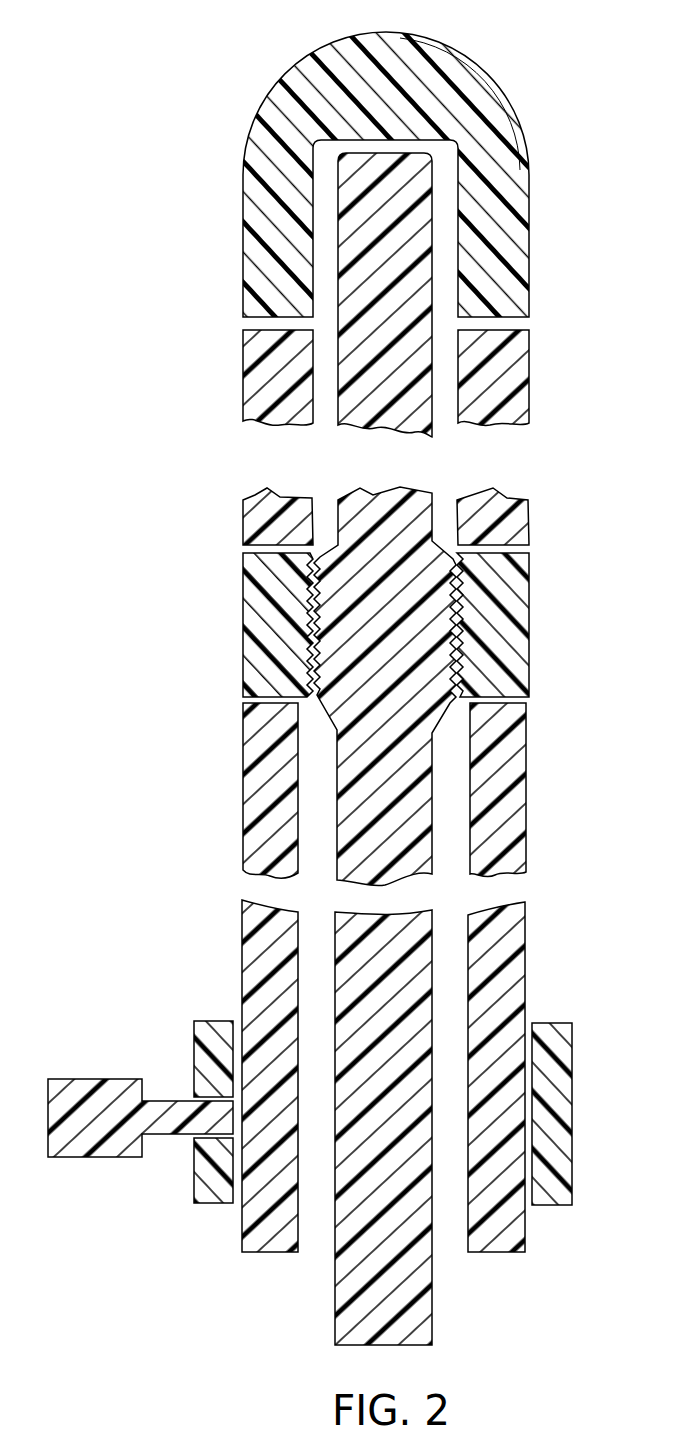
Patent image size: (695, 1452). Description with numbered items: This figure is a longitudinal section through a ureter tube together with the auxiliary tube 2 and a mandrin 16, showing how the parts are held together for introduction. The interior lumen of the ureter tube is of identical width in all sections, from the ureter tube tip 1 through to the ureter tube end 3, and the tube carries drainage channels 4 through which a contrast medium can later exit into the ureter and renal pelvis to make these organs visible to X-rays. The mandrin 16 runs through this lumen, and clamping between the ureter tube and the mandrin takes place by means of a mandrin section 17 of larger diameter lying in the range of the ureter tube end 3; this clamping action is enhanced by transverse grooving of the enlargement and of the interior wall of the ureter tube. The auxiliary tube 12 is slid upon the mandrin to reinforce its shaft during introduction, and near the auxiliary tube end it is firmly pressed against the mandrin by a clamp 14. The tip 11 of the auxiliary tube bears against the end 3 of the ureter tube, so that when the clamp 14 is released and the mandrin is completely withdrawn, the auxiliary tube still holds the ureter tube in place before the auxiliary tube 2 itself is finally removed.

The ureter tube tip 1 is at (403, 31).
The auxiliary tube 2 is at (243, 238).
The ureter tube end 3 is at (243, 612).
The drainage channels 4 is at (520, 327).
The tip of the auxiliary tube 11 is at (497, 723).
The auxiliary tube 12 is at (257, 818).
The clamp 14 is at (194, 1037).
The mandrin 16 is at (427, 263).
The mandrin section with larger diameter 17 is at (470, 623).